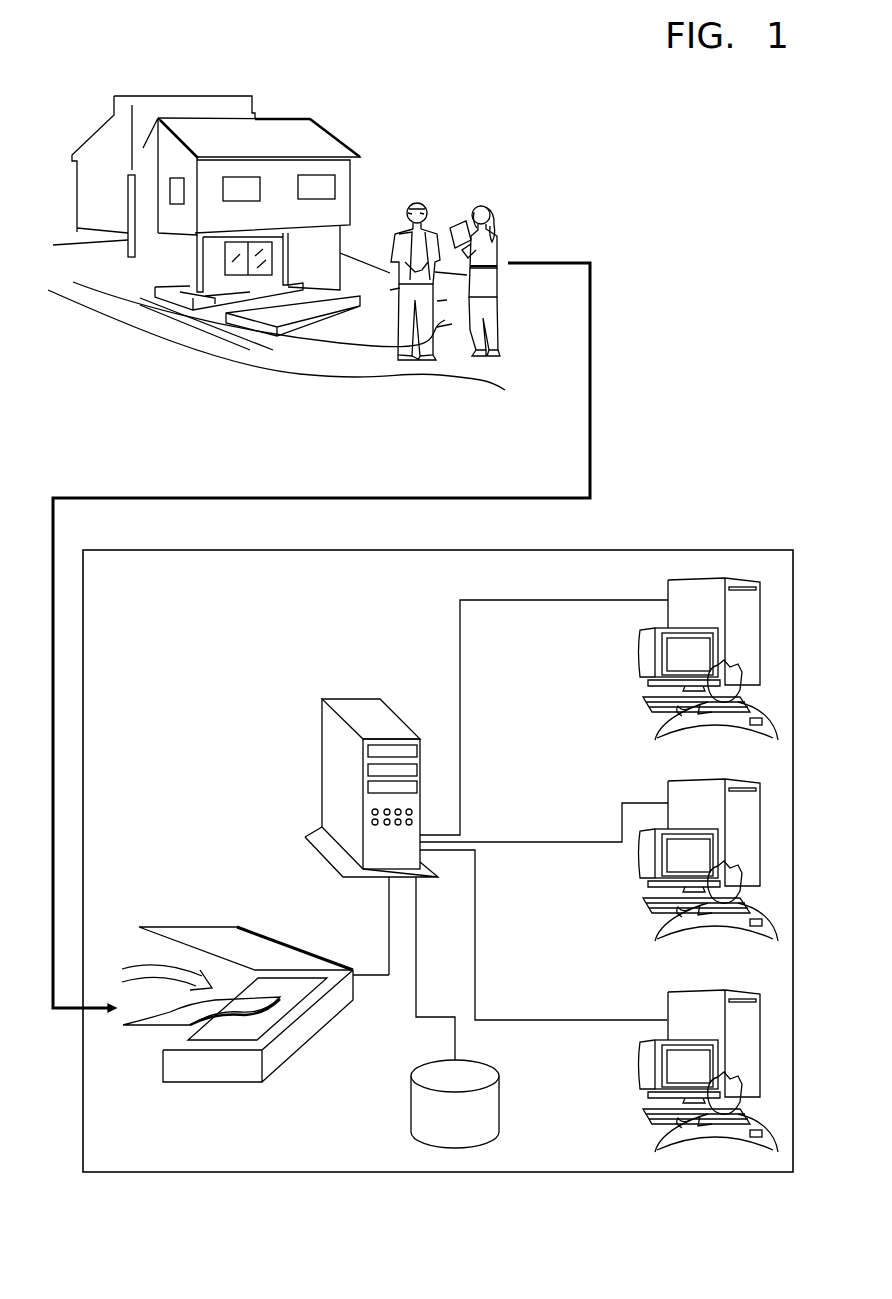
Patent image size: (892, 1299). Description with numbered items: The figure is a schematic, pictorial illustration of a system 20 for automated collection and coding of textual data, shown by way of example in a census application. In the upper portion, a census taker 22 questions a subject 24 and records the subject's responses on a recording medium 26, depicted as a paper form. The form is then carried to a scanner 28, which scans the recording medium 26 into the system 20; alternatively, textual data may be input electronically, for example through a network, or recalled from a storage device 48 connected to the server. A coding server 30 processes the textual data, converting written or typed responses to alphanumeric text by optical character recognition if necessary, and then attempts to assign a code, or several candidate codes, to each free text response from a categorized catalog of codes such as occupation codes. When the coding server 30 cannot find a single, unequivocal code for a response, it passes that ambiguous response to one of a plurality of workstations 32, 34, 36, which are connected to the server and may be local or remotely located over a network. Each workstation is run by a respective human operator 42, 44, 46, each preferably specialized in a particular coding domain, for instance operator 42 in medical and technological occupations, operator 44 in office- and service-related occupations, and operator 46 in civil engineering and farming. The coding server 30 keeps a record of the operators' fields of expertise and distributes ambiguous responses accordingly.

The system 20 is at (675, 550).
The census taker 22 is at (492, 205).
The subject 24 is at (410, 206).
The recording medium 26 is at (460, 224).
The scanner 28 is at (282, 1050).
The coding server 30 is at (357, 707).
The workstation 32 is at (753, 610).
The workstation 34 is at (753, 811).
The workstation 36 is at (753, 1022).
The human operator 42 is at (738, 680).
The human operator 44 is at (738, 881).
The human operator 46 is at (738, 1092).
The storage device 48 is at (492, 1122).